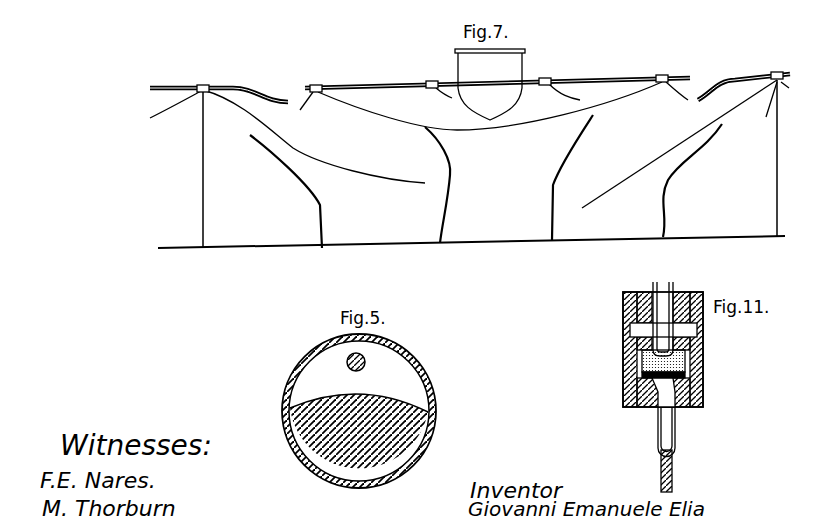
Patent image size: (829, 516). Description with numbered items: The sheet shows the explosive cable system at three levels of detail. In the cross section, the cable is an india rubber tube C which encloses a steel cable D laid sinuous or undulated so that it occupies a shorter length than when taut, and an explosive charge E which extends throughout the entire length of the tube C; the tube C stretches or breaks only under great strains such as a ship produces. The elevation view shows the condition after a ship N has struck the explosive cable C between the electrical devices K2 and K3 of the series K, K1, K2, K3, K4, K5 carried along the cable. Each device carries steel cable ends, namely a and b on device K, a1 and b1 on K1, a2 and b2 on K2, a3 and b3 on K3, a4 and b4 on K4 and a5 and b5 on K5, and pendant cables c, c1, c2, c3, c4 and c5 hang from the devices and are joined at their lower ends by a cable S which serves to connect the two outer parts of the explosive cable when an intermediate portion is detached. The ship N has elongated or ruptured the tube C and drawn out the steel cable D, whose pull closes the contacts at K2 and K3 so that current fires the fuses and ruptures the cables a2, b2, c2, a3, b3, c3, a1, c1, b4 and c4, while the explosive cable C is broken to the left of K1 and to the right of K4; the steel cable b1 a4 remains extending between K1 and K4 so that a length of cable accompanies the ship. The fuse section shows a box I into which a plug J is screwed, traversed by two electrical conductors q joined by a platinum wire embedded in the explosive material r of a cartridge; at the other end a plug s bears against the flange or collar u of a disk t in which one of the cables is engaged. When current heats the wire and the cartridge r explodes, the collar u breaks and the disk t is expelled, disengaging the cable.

In FIG. 7, the electrical device K is at (203, 85).
In FIG. 7, the electrical device K1 is at (316, 85).
In FIG. 7, the electrical device K2 is at (433, 81).
In FIG. 7, the electrical device K3 is at (546, 78).
In FIG. 7, the electrical device K4 is at (662, 75).
In FIG. 7, the electrical device K5 is at (778, 72).
In FIG. 7, the india rubber tube C is at (250, 88).
In FIG. 5, the india rubber tube C is at (411, 354).
In FIG. 7, the ship N is at (490, 84).
In FIG. 7, the cable S is at (265, 248).
In FIG. 7, the steel cable end a is at (163, 112).
In FIG. 7, the steel cable end a1 is at (302, 111).
In FIG. 7, the steel cable end a2 is at (416, 100).
In FIG. 7, the steel cable end a3 is at (544, 90).
In FIG. 7, the steel cable end a4 is at (627, 101).
In FIG. 7, the steel cable end a5 is at (679, 144).
In FIG. 7, the steel cable end b is at (233, 113).
In FIG. 7, the steel cable end b1 is at (337, 99).
In FIG. 7, the steel cable end b2 is at (450, 98).
In FIG. 7, the steel cable end b3 is at (580, 98).
In FIG. 7, the steel cable end b4 is at (678, 92).
In FIG. 7, the steel cable end b5 is at (763, 120).
In FIG. 7, the pendant cable c is at (204, 172).
In FIG. 7, the pendant cable c1 is at (318, 93).
In FIG. 11, the pendant cable c1 is at (675, 465).
In FIG. 7, the pendant cable c2 is at (428, 92).
In FIG. 7, the pendant cable c3 is at (548, 92).
In FIG. 7, the pendant cable c4 is at (660, 88).
In FIG. 7, the pendant cable c5 is at (784, 193).
In FIG. 5, the steel cable D is at (366, 363).
In FIG. 5, the explosive charge E is at (335, 398).
In FIG. 11, the electrical conductors q is at (671, 281).
In FIG. 11, the plug J is at (637, 312).
In FIG. 11, the box I is at (630, 356).
In FIG. 11, the explosive material r is at (700, 350).
In FIG. 11, the flange or collar u is at (692, 376).
In FIG. 11, the disk t is at (643, 408).
In FIG. 11, the plug s is at (695, 408).